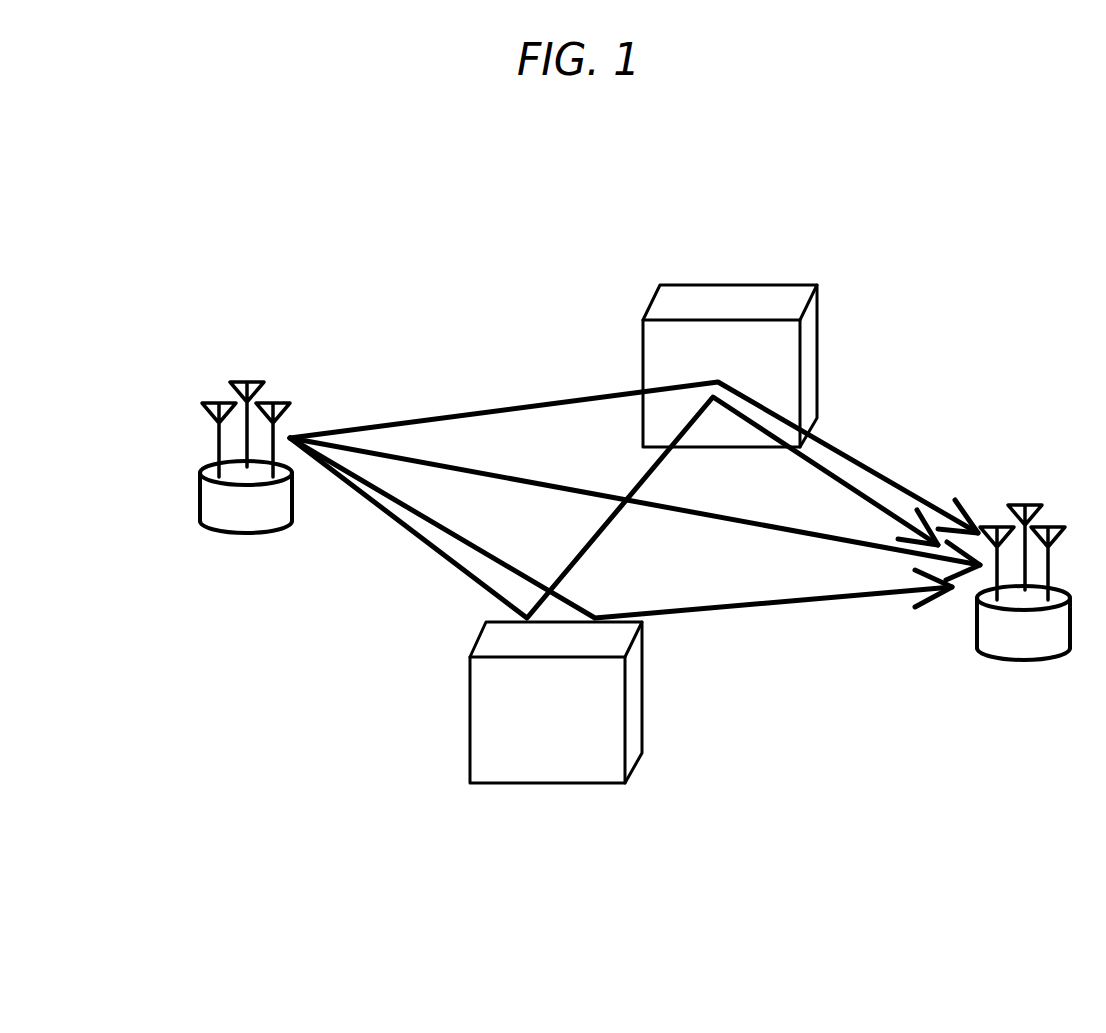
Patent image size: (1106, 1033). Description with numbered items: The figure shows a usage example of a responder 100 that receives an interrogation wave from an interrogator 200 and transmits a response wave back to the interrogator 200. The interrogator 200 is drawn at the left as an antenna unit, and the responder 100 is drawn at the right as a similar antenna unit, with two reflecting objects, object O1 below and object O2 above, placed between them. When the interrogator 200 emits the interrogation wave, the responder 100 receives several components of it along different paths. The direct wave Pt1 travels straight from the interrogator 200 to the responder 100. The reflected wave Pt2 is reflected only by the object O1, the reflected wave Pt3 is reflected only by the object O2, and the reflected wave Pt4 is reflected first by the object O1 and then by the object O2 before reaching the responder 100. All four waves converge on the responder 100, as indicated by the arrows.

The responder 100 is at (1010, 633).
The interrogator 200 is at (247, 513).